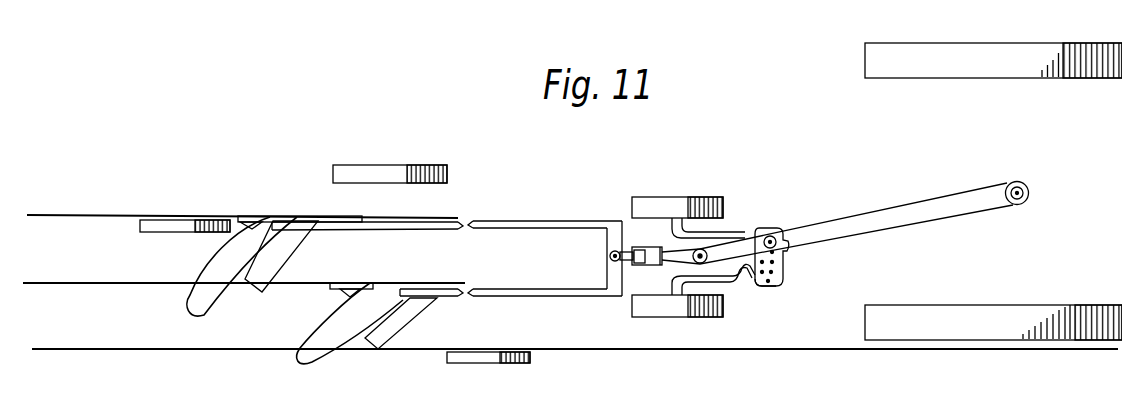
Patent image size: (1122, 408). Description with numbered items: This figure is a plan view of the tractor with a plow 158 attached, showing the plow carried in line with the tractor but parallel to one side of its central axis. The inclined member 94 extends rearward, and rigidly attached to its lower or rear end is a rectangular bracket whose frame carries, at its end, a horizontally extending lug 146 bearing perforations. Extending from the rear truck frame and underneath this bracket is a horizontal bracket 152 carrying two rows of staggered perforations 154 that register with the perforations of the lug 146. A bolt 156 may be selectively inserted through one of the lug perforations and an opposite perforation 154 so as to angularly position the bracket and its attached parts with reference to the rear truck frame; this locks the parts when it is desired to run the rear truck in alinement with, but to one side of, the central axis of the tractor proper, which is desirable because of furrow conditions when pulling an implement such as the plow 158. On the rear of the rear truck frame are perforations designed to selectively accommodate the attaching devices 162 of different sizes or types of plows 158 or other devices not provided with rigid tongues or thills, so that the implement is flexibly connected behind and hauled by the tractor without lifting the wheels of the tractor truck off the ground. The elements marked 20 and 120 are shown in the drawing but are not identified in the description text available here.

The frame rail 20 is at (988, 76).
The inclined member 94 is at (880, 222).
The stop block 120 is at (670, 205).
The horizontally extending lug 146 is at (778, 237).
The horizontal bracket 152 is at (760, 284).
The staggered perforations 154 is at (784, 263).
The bolt 156 is at (770, 232).
The plow 158 is at (308, 342).
The attaching devices 162 is at (633, 247).